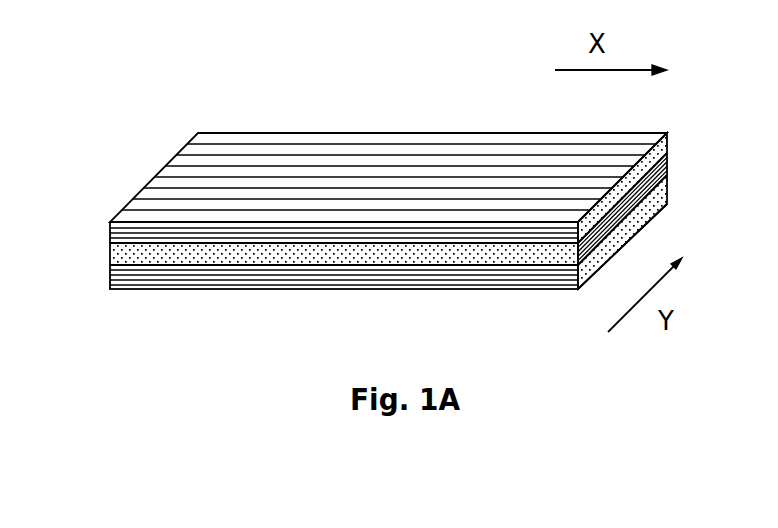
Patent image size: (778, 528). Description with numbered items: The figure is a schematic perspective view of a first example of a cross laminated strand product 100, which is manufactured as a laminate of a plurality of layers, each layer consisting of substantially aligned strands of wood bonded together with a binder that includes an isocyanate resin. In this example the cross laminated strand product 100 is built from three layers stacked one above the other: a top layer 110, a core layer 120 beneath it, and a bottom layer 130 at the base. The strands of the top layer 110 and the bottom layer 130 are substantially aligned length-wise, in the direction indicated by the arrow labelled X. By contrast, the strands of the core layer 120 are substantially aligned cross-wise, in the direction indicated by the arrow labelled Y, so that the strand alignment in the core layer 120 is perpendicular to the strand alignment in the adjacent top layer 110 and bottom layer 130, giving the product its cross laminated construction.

The cross laminated strand product 100 is at (227, 98).
The top layer 110 is at (125, 235).
The core layer 120 is at (183, 252).
The bottom layer 130 is at (263, 278).